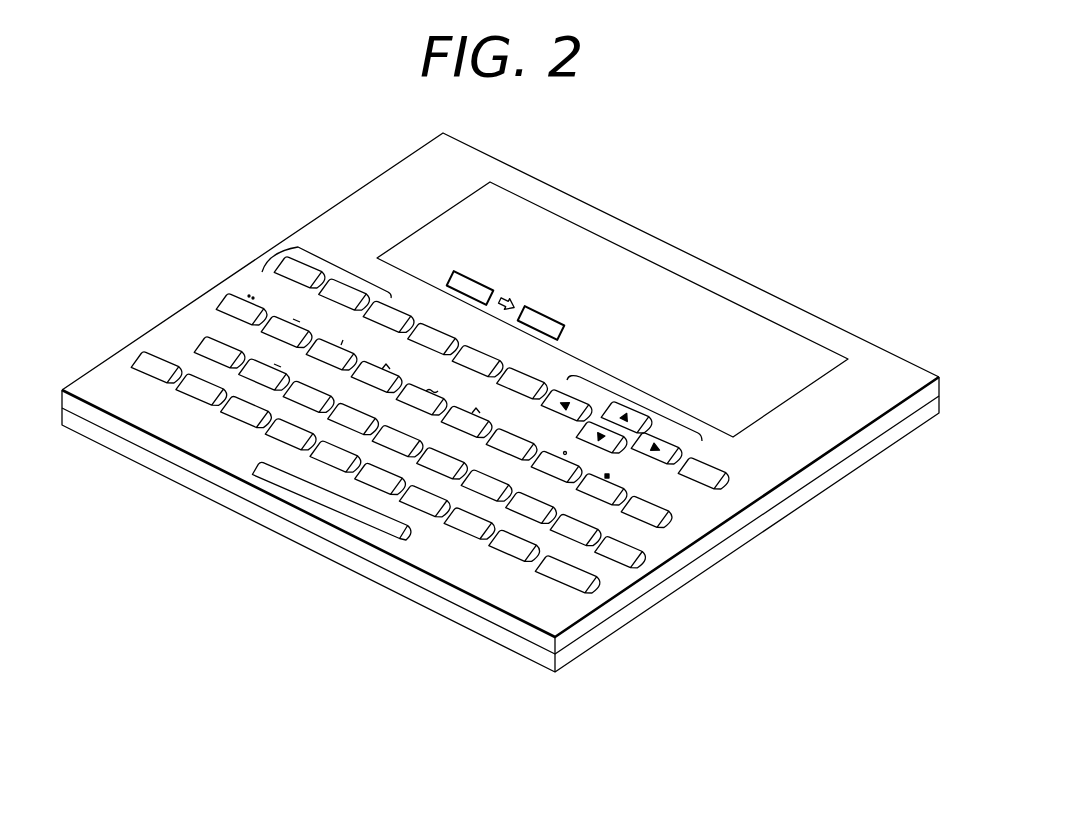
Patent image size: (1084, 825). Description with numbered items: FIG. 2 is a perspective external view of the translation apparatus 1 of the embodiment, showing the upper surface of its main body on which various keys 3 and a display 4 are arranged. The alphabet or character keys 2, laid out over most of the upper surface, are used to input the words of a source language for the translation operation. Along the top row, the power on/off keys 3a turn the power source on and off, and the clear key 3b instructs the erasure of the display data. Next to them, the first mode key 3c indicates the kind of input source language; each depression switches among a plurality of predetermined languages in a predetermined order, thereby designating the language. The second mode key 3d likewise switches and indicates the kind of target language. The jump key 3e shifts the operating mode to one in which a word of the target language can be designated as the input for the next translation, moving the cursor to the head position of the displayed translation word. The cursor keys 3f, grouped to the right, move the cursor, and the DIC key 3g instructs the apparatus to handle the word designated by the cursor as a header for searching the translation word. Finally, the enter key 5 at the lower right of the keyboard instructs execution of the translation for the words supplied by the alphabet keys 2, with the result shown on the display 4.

The electronic translator 1 is at (787, 488).
The alphabet keys 2 is at (180, 320).
The ON key 3 is at (273, 257).
The power on/off keys 3a is at (348, 267).
The clear key 3b is at (405, 310).
The first mode key 3c is at (443, 330).
The second mode key 3d is at (487, 350).
The jump key 3e is at (532, 380).
The cursor keys 3f is at (645, 403).
The DIC key 3g is at (718, 482).
The display 4 is at (738, 325).
The enter key 5 is at (597, 583).